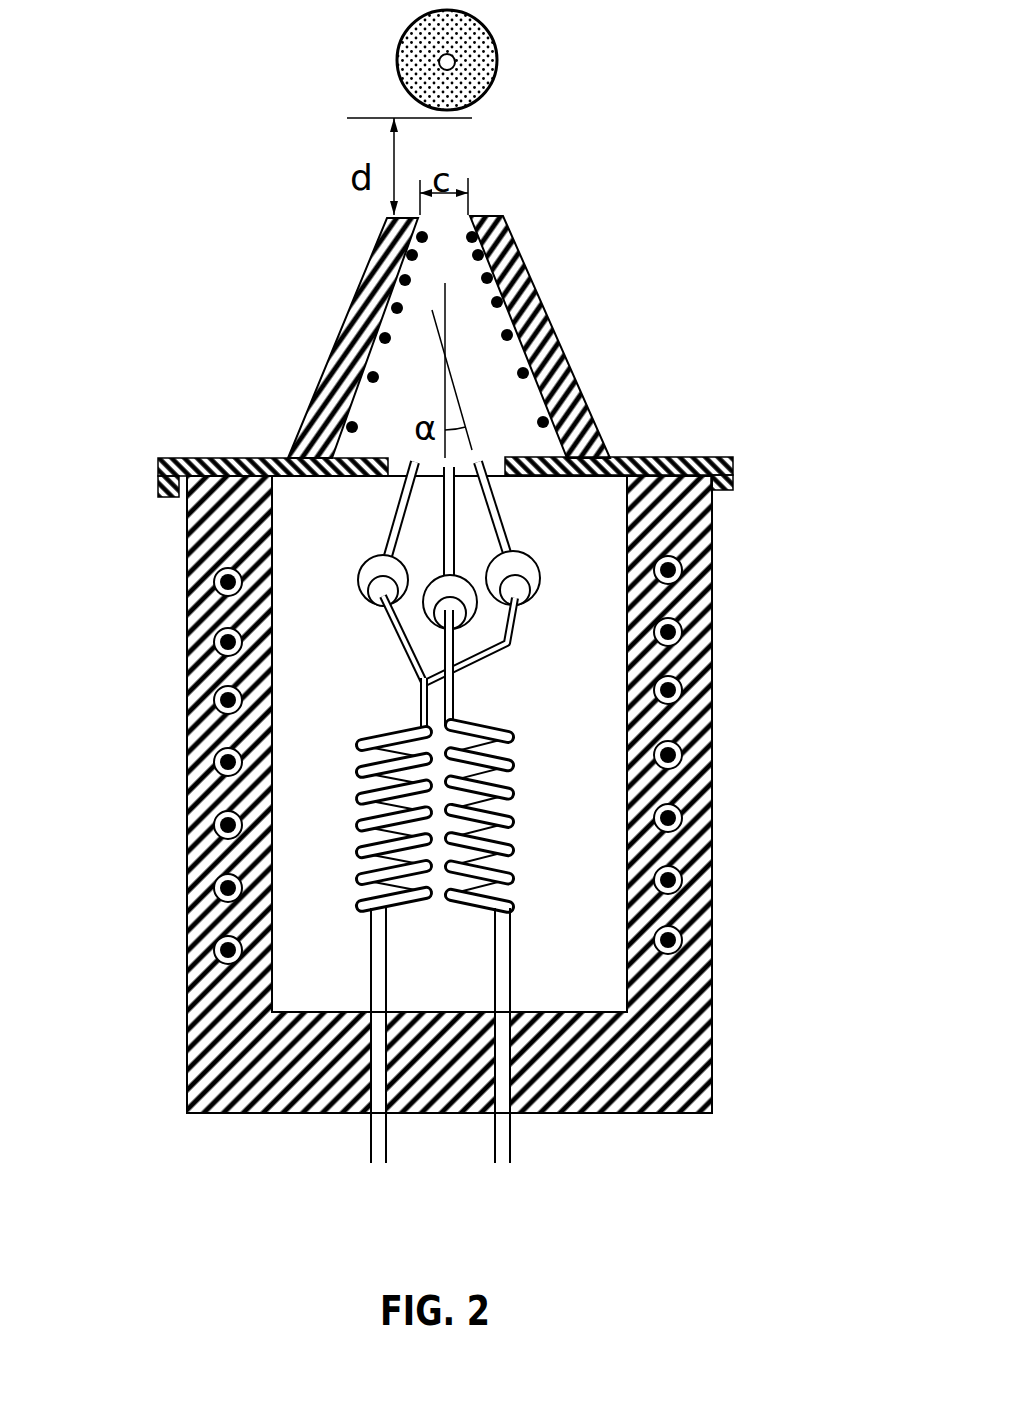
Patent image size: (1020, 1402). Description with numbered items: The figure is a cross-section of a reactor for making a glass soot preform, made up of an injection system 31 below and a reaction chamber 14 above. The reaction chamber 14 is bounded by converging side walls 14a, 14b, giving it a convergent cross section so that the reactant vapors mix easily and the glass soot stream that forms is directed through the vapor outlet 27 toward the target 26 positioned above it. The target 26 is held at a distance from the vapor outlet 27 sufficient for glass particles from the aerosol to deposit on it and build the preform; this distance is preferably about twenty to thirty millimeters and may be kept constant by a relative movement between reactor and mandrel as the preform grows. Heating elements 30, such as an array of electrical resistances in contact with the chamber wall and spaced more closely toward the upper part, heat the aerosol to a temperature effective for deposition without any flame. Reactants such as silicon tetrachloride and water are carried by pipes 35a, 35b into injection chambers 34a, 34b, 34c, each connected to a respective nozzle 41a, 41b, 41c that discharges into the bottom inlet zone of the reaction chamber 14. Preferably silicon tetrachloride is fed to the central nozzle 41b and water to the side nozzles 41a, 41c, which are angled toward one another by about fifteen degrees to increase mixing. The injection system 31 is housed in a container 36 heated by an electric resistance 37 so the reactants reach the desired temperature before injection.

The target 26 is at (401, 60).
The vapor outlet 27 is at (514, 202).
The reaction chamber 14 is at (422, 337).
The converging side wall 14a is at (577, 337).
The converging side wall 14b is at (289, 338).
The heating elements 30 is at (507, 332).
The injection system 31 is at (462, 794).
The container 36 is at (507, 794).
The electric resistance 37 is at (514, 760).
The side nozzle 41a is at (347, 509).
The central nozzle 41b is at (383, 590).
The side nozzle 41c is at (538, 510).
The injection chamber 34a is at (362, 657).
The injection chamber 34b is at (510, 668).
The injection chamber 34c is at (521, 640).
The pipe 35a is at (520, 944).
The pipe 35b is at (416, 947).